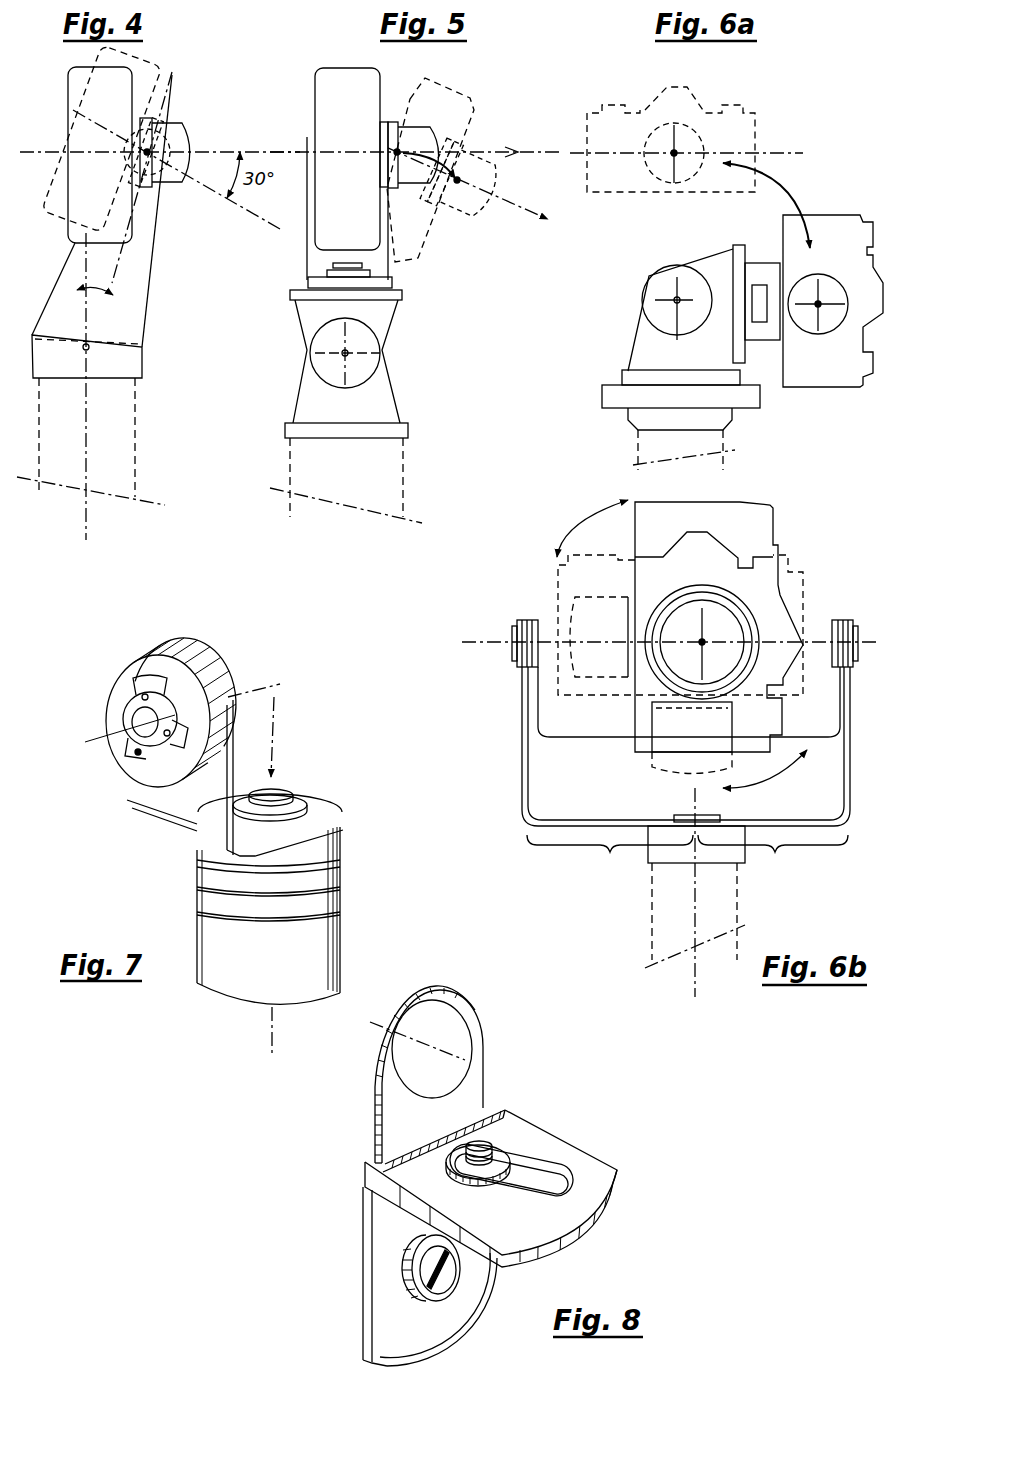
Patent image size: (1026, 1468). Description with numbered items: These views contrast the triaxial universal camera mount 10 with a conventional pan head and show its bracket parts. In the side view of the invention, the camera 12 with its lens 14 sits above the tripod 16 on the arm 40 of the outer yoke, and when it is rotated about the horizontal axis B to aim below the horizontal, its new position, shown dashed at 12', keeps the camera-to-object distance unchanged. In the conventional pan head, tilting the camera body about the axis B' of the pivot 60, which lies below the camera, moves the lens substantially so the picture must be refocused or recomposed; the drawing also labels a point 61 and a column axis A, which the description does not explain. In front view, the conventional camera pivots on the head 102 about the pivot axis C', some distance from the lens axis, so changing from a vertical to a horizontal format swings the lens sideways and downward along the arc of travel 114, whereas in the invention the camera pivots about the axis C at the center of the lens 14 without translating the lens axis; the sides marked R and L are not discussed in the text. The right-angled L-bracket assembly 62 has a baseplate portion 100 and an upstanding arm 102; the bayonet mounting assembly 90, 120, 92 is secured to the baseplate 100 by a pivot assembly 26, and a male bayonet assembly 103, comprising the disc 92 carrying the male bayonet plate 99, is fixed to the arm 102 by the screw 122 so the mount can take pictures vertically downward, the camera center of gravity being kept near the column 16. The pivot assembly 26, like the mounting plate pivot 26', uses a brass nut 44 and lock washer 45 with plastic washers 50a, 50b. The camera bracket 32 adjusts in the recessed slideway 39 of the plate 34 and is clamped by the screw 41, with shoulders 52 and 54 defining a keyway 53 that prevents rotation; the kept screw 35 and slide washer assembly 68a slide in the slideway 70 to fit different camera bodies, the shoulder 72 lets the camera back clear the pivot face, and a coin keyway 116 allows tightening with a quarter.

In FIG. 4, the triaxial universal camera mount 10 is at (158, 283).
In FIG. 6B, the triaxial universal camera mount 10 is at (512, 612).
In FIG. 4, the camera 12 is at (100, 155).
In FIG. 5, the camera 12 is at (347, 159).
In FIG. 6A, the camera 12 is at (833, 301).
In FIG. 6B, the camera 12 is at (719, 638).
In FIG. 4, the camera in rotated position 12' is at (103, 138).
In FIG. 5, the camera in rotated position 12' is at (467, 170).
In FIG. 6A, the camera in rotated position 12' is at (671, 139).
In FIG. 6B, the camera in rotated position 12' is at (680, 625).
In FIG. 6B, the lens 14 is at (683, 660).
In FIG. 4, the tripod 16 is at (116, 446).
In FIG. 5, the tripod 16 is at (346, 480).
In FIG. 7, the tripod 16 is at (300, 971).
In FIG. 7, the pivot assembly 26 is at (302, 728).
In FIG. 8, the mounting plate pivot 26' is at (466, 1030).
In FIG. 8, the camera bracket 32 is at (560, 1163).
In FIG. 8, the plate 34 is at (473, 1067).
In FIG. 8, the kept screw 35 is at (500, 1160).
In FIG. 8, the recessed slideway 39 is at (418, 1305).
In FIG. 4, the arm of outer yoke 40 is at (134, 313).
In FIG. 8, the screw 41 is at (427, 1263).
In FIG. 7, the nut 44 is at (293, 797).
In FIG. 7, the lock washer 45 is at (268, 793).
In FIG. 7, the washer 50a is at (263, 807).
In FIG. 7, the washer 50b is at (327, 815).
In FIG. 8, the shoulder 52 is at (368, 1163).
In FIG. 8, the keyway 53 is at (395, 1145).
In FIG. 8, the shoulder 54 is at (497, 1110).
In FIG. 5, the pivot 60 is at (372, 375).
In FIG. 6A, the bearing 61 is at (680, 272).
In FIG. 7, the L-bracket assembly 62 is at (242, 758).
In FIG. 8, the slide washer assembly 68a is at (483, 1147).
In FIG. 8, the slideway 70 is at (577, 1173).
In FIG. 8, the shoulder 72 is at (390, 1163).
In FIG. 7, the round plate 90 is at (343, 837).
In FIG. 7, the disc 92 is at (173, 672).
In FIG. 7, the male bayonet plate 99 is at (150, 745).
In FIG. 7, the baseplate portion 100 is at (283, 812).
In FIG. 6A, the upstanding arm 102 is at (709, 263).
In FIG. 7, the male bayonet assembly 103 is at (113, 703).
In FIG. 6A, the arc of travel 114 is at (784, 195).
In FIG. 8, the keyway 116 is at (420, 1292).
In FIG. 7, the bayonet mounting assembly component 120 is at (342, 870).
In FIG. 7, the screw 122 is at (137, 724).
In FIG. 6B, the pan axis A is at (706, 913).
In FIG. 4, the horizontal axis B is at (169, 127).
In FIG. 5, the tilt axis of conventional pivot B' is at (402, 325).
In FIG. 6B, the lens-centered pivot axis C is at (749, 625).
In FIG. 6A, the conventional pivot axis C' is at (622, 282).
In FIG. 6B, the right side R is at (610, 865).
In FIG. 6B, the left side L is at (773, 864).